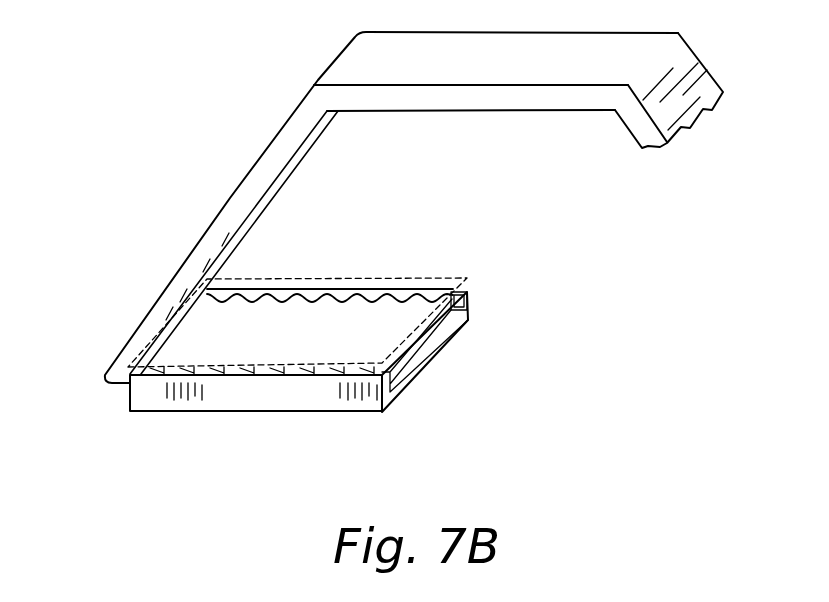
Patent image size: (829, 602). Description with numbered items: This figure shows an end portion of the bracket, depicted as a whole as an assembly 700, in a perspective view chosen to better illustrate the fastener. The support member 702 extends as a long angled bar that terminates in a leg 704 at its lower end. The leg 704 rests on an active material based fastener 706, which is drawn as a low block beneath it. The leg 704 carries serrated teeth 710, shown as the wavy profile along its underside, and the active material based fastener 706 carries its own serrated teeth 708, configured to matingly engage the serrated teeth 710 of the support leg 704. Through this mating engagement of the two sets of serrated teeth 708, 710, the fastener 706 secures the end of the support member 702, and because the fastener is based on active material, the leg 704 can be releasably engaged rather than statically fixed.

The assembly 700 is at (398, 250).
The support member 702 is at (288, 117).
The leg 704 is at (425, 338).
The active material based fastener 706 is at (240, 398).
The serrated teeth 708 is at (347, 293).
The serrated teeth 710 is at (408, 300).